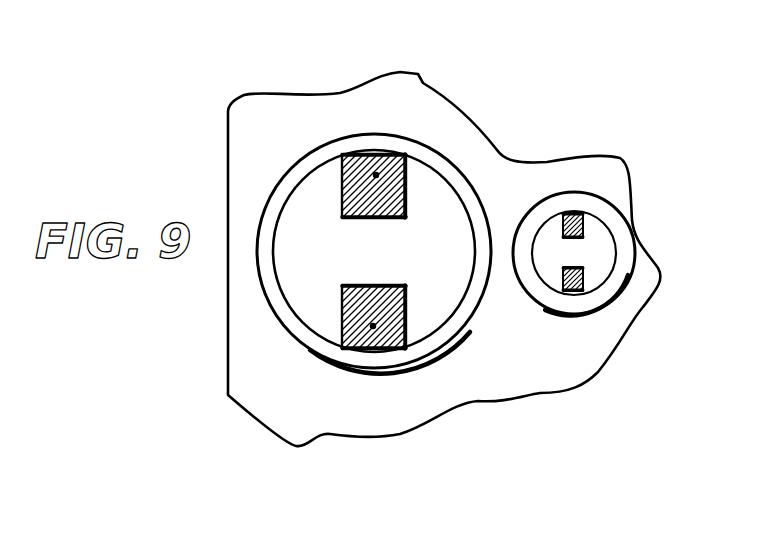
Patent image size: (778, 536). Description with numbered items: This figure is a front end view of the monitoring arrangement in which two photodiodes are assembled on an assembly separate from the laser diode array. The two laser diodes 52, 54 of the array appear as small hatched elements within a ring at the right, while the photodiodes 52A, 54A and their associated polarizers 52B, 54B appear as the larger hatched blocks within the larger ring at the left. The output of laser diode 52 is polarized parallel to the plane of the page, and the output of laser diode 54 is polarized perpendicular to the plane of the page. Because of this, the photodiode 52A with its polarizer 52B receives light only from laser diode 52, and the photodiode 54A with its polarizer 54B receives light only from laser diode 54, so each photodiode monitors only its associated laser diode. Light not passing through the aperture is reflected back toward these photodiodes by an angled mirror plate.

The laser diode 52 is at (583, 227).
The laser diode 54 is at (585, 280).
The photodiode 52A is at (406, 186).
The polarizer 52B is at (376, 175).
The photodiode 54A is at (406, 318).
The polarizer 54B is at (374, 327).